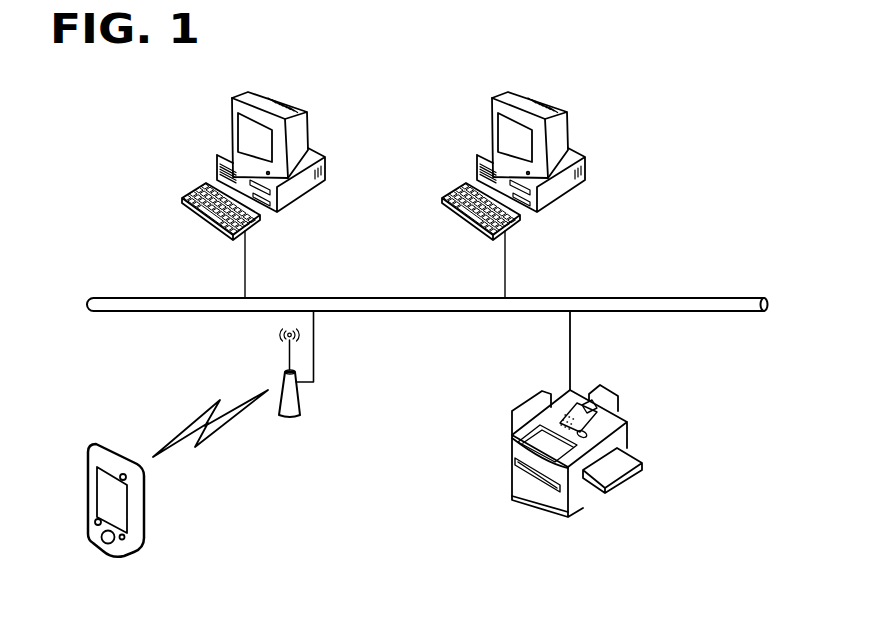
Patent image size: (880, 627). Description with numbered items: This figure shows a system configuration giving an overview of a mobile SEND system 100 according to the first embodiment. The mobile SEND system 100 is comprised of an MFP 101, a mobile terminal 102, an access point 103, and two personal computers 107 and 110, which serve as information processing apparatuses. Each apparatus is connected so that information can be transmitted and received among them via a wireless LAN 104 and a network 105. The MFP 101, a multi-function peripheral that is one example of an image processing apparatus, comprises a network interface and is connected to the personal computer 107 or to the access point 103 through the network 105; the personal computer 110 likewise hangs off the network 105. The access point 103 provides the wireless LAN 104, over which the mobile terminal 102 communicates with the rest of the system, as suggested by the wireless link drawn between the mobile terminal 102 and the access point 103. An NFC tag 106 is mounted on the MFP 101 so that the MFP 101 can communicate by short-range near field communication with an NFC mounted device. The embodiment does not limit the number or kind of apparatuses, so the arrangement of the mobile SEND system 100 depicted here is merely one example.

The mobile SEND system 100 is at (743, 70).
The MFP 101 is at (628, 421).
The mobile terminal 102 is at (99, 443).
The access point 103 is at (293, 420).
The wireless LAN 104 is at (191, 424).
The network 105 is at (737, 298).
The NFC tag 106 is at (627, 468).
The personal computer 107 is at (279, 94).
The personal computer 110 is at (563, 80).